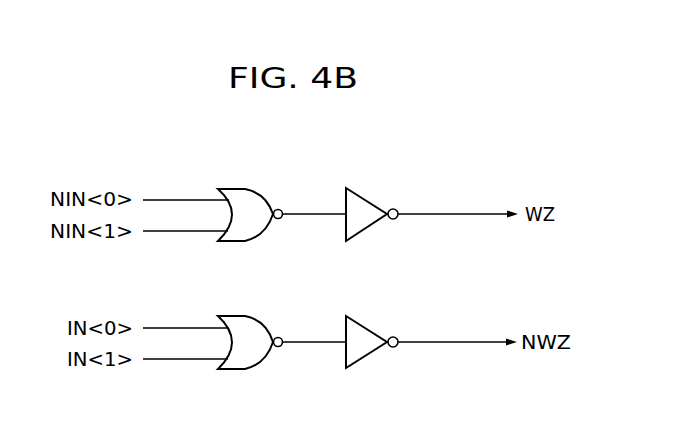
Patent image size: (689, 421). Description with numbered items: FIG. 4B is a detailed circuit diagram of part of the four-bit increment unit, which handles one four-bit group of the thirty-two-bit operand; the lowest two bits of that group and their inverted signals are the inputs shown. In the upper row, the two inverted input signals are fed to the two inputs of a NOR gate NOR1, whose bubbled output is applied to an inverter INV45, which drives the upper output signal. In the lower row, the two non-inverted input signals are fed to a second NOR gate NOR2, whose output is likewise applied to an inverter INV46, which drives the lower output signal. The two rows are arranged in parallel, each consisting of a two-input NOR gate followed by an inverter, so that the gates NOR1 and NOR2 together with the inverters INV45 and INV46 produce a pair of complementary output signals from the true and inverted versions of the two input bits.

The NOR gate NOR1 is at (249, 189).
The inverter INV45 is at (362, 197).
The NOR gate NOR2 is at (249, 316).
The inverter INV46 is at (362, 325).